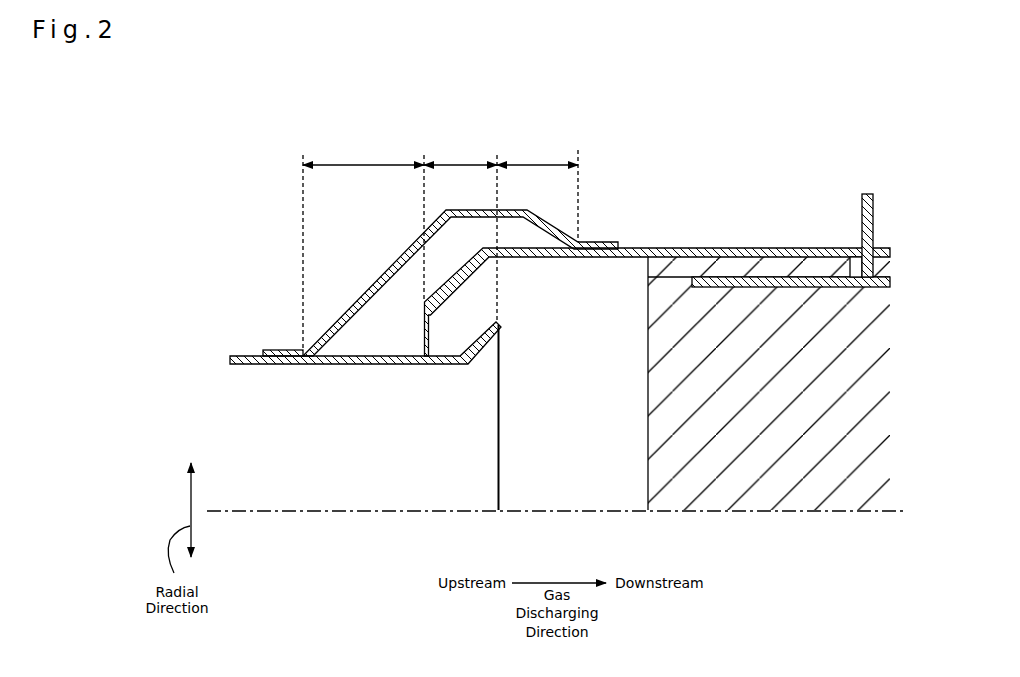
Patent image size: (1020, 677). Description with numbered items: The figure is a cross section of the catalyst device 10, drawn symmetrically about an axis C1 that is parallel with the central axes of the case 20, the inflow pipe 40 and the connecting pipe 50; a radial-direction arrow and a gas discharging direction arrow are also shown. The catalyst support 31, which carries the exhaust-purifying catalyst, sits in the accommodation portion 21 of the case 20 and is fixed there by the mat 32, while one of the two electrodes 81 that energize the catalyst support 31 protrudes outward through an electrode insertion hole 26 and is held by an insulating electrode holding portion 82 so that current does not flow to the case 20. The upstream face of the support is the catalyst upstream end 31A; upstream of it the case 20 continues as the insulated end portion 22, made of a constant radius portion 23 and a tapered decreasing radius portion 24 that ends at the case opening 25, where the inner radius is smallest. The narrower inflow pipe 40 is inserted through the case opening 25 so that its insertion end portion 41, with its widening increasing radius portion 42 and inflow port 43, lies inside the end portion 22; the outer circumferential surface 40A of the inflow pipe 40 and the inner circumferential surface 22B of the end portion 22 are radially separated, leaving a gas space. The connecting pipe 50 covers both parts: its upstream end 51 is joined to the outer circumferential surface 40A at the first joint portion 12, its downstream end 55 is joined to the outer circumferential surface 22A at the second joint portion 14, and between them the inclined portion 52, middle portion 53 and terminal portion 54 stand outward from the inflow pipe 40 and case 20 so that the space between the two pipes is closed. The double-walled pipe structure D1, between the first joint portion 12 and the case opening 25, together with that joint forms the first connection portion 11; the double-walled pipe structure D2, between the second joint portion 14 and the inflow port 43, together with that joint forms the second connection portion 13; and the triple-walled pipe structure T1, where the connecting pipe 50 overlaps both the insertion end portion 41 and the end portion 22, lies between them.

The catalyst device 10 is at (721, 157).
The first connection portion 11 is at (293, 274).
The first joint portion 12 is at (255, 347).
The second connection portion 13 is at (592, 176).
The second joint portion 14 is at (630, 238).
The case 20 is at (723, 247).
The accommodation portion 21 is at (763, 247).
The end portion 22 is at (434, 273).
The outer circumferential surface of the end portion 22A is at (527, 247).
The inner circumferential surface of the end portion 22B is at (547, 257).
The constant radius portion 23 is at (593, 257).
The decreasing radius portion 24 is at (470, 280).
The case opening 25 is at (430, 318).
The electrode insertion hole 26 is at (860, 252).
The catalyst support 31 is at (741, 328).
The catalyst upstream end 31A is at (647, 388).
The mat 32 is at (808, 263).
The inflow pipe 40 is at (392, 368).
The outer circumferential surface of the inflow pipe 40A is at (342, 350).
The insertion end portion 41 is at (452, 367).
The increasing radius portion 42 is at (480, 353).
The inflow port 43 is at (500, 447).
The connecting pipe 50 is at (385, 271).
The upstream end 51 is at (272, 350).
The inclined portion 52 is at (335, 323).
The middle portion 53 is at (467, 218).
The terminal portion 54 is at (568, 228).
The downstream end 55 is at (603, 242).
The electrode 81 is at (867, 193).
The electrode holding portion 82 is at (878, 250).
The axis C1 is at (295, 513).
The double-walled pipe structure D1 is at (362, 163).
The triple-walled pipe structure T1 is at (455, 163).
The double-walled pipe structure D2 is at (537, 163).